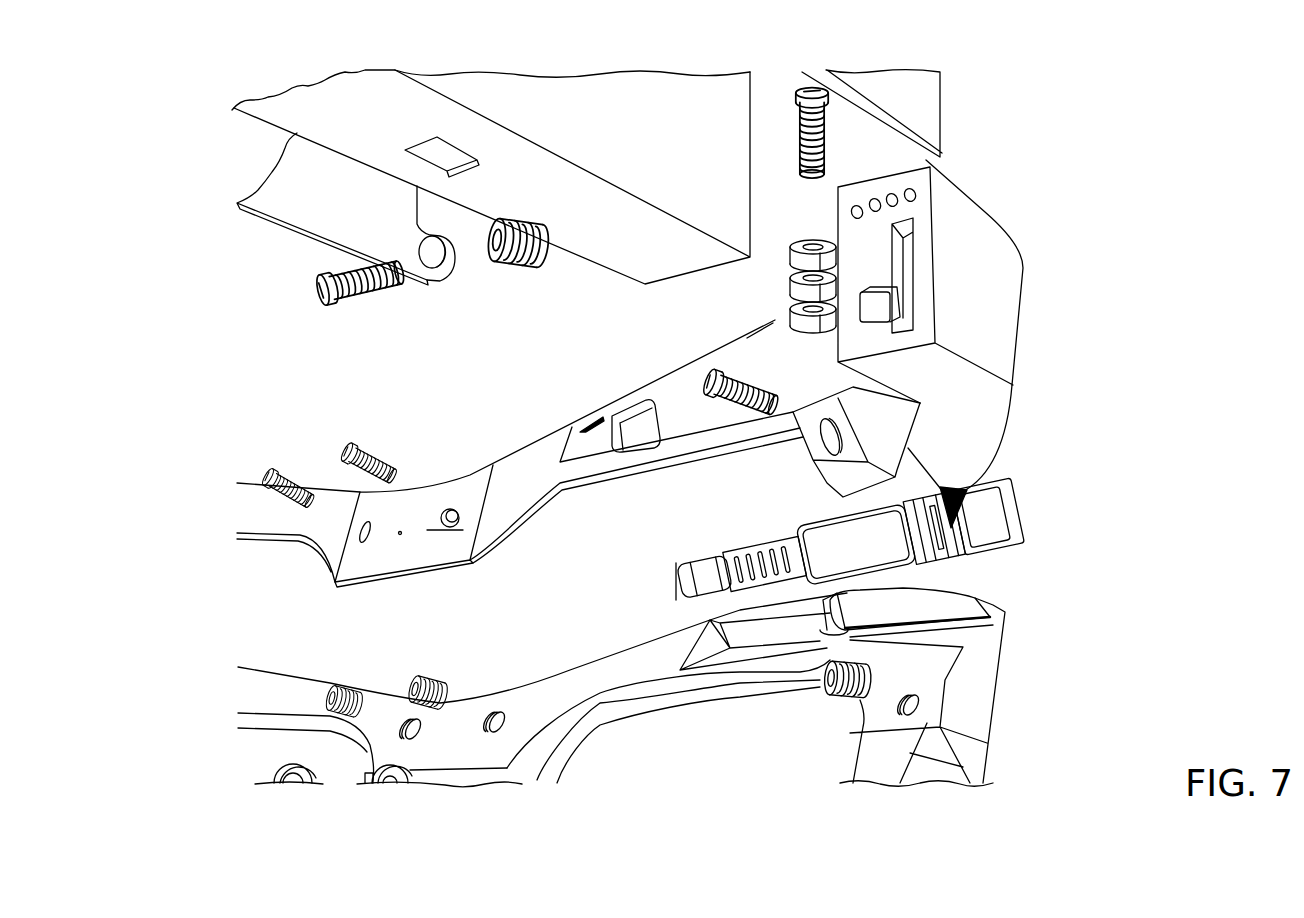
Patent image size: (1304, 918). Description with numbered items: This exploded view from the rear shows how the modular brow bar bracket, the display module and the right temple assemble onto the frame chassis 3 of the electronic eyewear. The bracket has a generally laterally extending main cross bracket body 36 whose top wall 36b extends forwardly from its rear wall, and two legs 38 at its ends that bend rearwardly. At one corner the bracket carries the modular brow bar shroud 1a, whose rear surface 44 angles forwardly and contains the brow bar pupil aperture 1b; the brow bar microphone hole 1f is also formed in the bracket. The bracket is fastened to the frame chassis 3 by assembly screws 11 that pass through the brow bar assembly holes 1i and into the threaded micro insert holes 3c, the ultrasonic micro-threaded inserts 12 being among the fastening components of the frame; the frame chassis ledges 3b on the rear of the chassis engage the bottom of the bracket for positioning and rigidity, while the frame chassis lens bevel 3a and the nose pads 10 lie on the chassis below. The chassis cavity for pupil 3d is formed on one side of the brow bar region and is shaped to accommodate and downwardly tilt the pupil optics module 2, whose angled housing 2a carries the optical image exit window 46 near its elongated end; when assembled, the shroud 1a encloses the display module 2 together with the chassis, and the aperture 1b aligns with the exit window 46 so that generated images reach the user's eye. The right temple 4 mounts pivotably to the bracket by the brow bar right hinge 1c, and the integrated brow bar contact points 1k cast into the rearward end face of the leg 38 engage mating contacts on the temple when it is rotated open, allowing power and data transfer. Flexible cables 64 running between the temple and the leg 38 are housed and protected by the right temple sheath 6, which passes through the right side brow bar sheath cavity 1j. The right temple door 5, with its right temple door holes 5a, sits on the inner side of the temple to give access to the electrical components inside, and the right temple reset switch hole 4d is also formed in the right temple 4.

The modular brow bar shroud 1a is at (682, 380).
The brow bar pupil aperture 1b is at (626, 422).
The brow bar right hinge 1c is at (803, 313).
The brow bar microphone hole 1f is at (397, 572).
The brow bar assembly hole 1i is at (447, 517).
The right side brow bar sheath cavity 1j is at (903, 278).
The integrated brow bar contact points 1k is at (910, 195).
The pupil optics module 2 is at (848, 546).
The housing 2a is at (856, 545).
The frame chassis 3 is at (568, 680).
The frame chassis lens bevel 3a is at (630, 707).
The frame chassis ledge 3b is at (453, 768).
The threaded micro insert holes 3c is at (490, 720).
The chassis cavity for pupil 3d is at (907, 617).
The right temple 4 is at (588, 248).
The right temple reset switch hole 4d is at (422, 143).
The right temple door 5 is at (273, 203).
The right temple door holes 5a is at (435, 268).
The right temple sheath 6 is at (927, 100).
The nose pads 10 is at (387, 763).
The assembly screws 11 is at (363, 293).
The ultrasonic micro-threaded inserts 12 is at (520, 260).
The main cross bracket body 36 is at (515, 452).
The top wall 36b is at (391, 497).
The legs 38 is at (980, 345).
The rear surface 44 is at (702, 428).
The optical image exit window 46 is at (690, 576).
The cables 64 is at (872, 300).